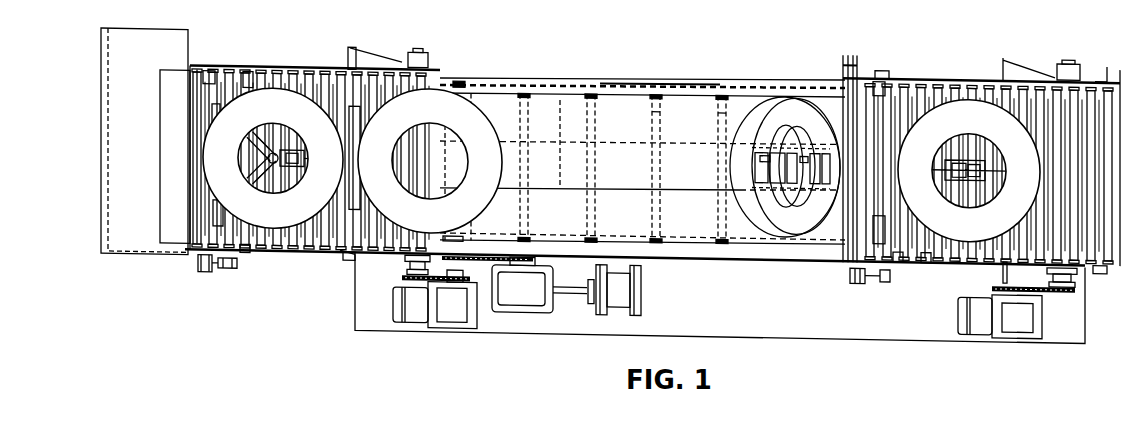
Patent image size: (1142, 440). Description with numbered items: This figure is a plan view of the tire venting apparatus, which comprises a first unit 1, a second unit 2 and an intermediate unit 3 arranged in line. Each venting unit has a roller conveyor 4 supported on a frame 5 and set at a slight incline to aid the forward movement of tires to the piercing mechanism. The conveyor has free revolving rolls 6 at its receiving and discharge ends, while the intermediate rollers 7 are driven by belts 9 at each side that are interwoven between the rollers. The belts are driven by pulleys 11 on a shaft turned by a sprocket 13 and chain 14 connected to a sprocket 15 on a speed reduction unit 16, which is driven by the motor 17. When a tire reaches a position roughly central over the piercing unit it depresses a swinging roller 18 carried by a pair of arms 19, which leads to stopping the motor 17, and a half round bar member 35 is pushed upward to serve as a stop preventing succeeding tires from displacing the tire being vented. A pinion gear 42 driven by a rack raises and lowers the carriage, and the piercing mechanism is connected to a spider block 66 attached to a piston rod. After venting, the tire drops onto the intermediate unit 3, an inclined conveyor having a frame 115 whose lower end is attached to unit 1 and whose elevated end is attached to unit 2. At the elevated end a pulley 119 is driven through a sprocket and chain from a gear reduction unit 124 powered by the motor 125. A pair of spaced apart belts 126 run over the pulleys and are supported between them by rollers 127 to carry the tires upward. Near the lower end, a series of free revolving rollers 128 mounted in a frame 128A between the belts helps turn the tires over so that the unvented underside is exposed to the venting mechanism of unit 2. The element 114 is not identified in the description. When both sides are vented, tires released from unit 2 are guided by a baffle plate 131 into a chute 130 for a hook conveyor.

The first unit 1 is at (923, 60).
The second unit 2 is at (321, 58).
The intermediate unit 3 is at (633, 66).
The roller conveyor 4 is at (217, 113).
The frame 5 is at (198, 266).
The free revolving rolls 6 is at (190, 112).
The intermediate rollers 7 is at (299, 62).
The belts 9 is at (207, 73).
The pulleys 11 is at (423, 54).
The sprocket 13 is at (402, 270).
The chain 14 is at (1048, 278).
The sprocket 15 is at (485, 274).
The speed reduction unit 16 is at (453, 307).
The motor 17 is at (417, 310).
The swinging roller 18 is at (217, 208).
The arms 19 is at (247, 66).
The half round bar member 35 is at (355, 104).
The pinion gear 42 is at (235, 264).
The spider block 66 is at (260, 158).
The end plate 114 is at (842, 75).
The frame 115 is at (707, 72).
The pulley 119 is at (463, 75).
The gear reduction unit 124 is at (517, 284).
The motor 125 is at (597, 296).
The belts 126 is at (557, 185).
The rollers 127 is at (723, 157).
The free revolving rollers 128 is at (780, 146).
The frame 128A is at (784, 193).
The chute 130 is at (117, 210).
The baffle plate 131 is at (160, 180).